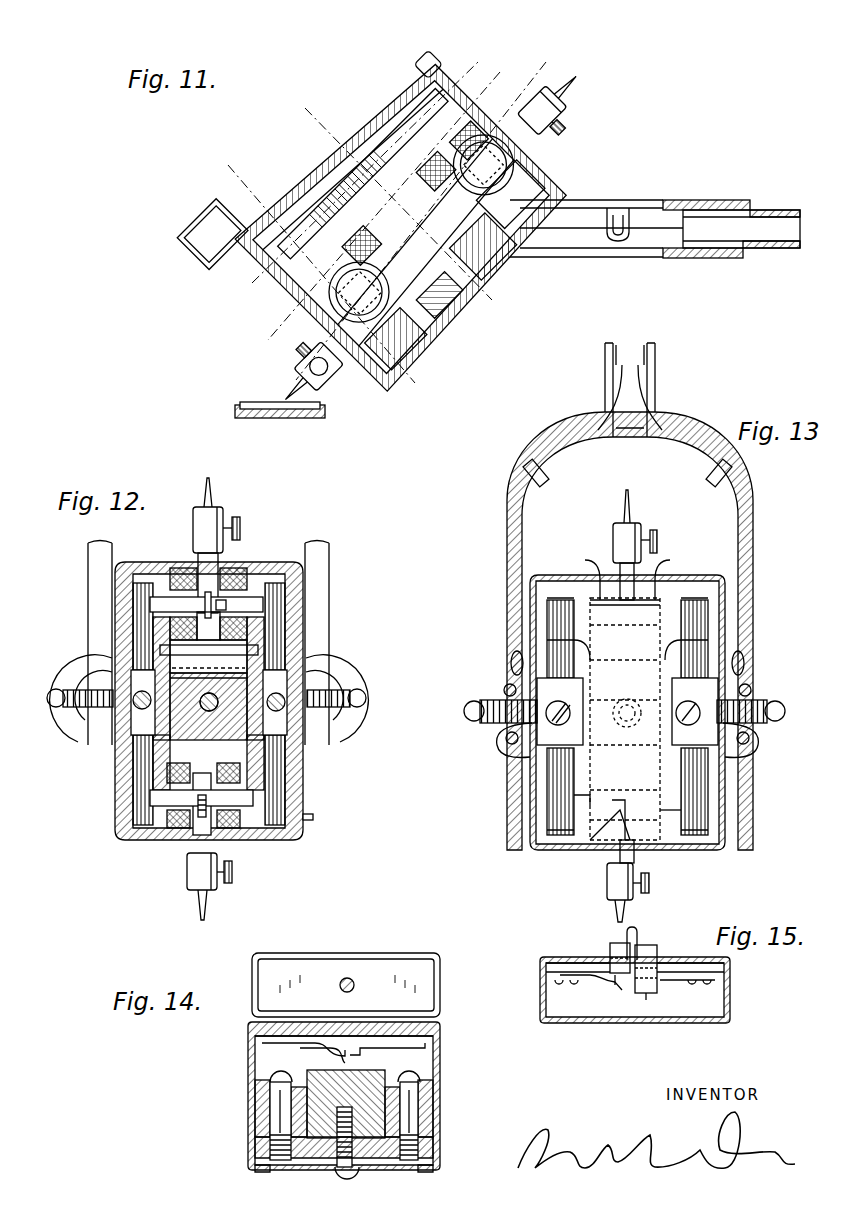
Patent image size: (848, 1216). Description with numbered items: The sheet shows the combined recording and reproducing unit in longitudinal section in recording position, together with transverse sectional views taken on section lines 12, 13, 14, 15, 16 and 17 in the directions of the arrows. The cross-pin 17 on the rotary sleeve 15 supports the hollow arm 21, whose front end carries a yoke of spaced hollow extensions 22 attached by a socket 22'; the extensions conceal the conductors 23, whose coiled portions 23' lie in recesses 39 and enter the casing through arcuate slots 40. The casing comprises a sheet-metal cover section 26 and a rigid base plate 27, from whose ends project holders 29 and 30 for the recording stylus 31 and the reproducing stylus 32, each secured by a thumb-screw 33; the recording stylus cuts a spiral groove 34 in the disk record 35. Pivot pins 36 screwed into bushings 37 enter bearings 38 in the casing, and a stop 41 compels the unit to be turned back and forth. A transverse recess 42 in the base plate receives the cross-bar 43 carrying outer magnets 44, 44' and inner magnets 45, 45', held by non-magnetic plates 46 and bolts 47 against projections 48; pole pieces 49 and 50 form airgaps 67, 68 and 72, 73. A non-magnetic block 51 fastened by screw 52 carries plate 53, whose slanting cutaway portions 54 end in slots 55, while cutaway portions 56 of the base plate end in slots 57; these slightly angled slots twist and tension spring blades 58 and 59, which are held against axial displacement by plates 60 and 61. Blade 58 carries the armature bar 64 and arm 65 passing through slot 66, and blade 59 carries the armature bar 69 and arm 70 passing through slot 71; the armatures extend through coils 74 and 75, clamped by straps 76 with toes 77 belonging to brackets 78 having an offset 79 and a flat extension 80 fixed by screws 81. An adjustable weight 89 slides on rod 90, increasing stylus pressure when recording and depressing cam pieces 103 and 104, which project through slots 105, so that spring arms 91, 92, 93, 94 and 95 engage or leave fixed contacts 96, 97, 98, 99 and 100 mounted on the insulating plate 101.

In FIG. 11, the section line 12— 12 is at (541, 62).
In FIG. 11, the section line 13— 13 is at (501, 66).
In FIG. 11, the section line 14— 14 is at (304, 104).
In FIG. 11, the rotary sleeve 15 is at (400, 57).
In FIG. 11, the section line 16— 16 is at (219, 171).
In FIG. 11, the cross-pin 17 is at (473, 66).
In FIG. 11, the arm 21 is at (765, 210).
In FIG. 13, the arm 21 is at (655, 355).
In FIG. 11, the yoke extensions 22 is at (596, 241).
In FIG. 12, the yoke extensions 22 is at (190, 643).
In FIG. 13, the yoke extensions 22 is at (622, 631).
In FIG. 11, the socket 22' is at (706, 216).
In FIG. 12, the socket 22' is at (343, 618).
In FIG. 13, the socket 22' is at (602, 373).
In FIG. 11, the conductors 23 is at (578, 191).
In FIG. 13, the conductors 23 is at (630, 414).
In FIG. 13, the coiled portions 23' is at (629, 601).
In FIG. 11, the cover section 26 is at (360, 130).
In FIG. 12, the cover section 26 is at (303, 768).
In FIG. 13, the cover section 26 is at (725, 785).
In FIG. 14, the cover section 26 is at (250, 1052).
In FIG. 15, the cover section 26 is at (730, 988).
In FIG. 11, the base plate 27 is at (385, 310).
In FIG. 11, the holder 29 is at (325, 372).
In FIG. 12, the holder 29 is at (187, 870).
In FIG. 13, the holder 29 is at (607, 877).
In FIG. 11, the holder 30 is at (545, 112).
In FIG. 12, the holder 30 is at (220, 530).
In FIG. 13, the holder 30 is at (615, 535).
In FIG. 11, the recording stylus 31 is at (303, 398).
In FIG. 12, the recording stylus 31 is at (200, 905).
In FIG. 13, the recording stylus 31 is at (615, 910).
In FIG. 11, the reproducing stylus 32 is at (558, 84).
In FIG. 12, the reproducing stylus 32 is at (207, 485).
In FIG. 13, the reproducing stylus 32 is at (630, 505).
In FIG. 11, the thumb-screw 33 is at (548, 98).
In FIG. 12, the thumb-screw 33 is at (240, 528).
In FIG. 13, the thumb-screw 33 is at (645, 893).
In FIG. 11, the spiral groove 34 is at (262, 404).
In FIG. 11, the disk record 35 is at (235, 412).
In FIG. 12, the pivot pins 36 is at (75, 708).
In FIG. 13, the pivot pins 36 is at (495, 718).
In FIG. 12, the bushings 37 is at (50, 706).
In FIG. 13, the bushings 37 is at (470, 702).
In FIG. 12, the bearings 38 is at (100, 685).
In FIG. 12, the recesses 39 is at (95, 725).
In FIG. 13, the recesses 39 is at (515, 745).
In FIG. 11, the arcuate slots 40 is at (395, 180).
In FIG. 13, the arcuate slots 40 is at (574, 655).
In FIG. 12, the stop 41 is at (313, 817).
In FIG. 11, the transverse recess 42 is at (468, 300).
In FIG. 11, the cross-bar 43 is at (460, 257).
In FIG. 12, the cross-bar 43 is at (160, 650).
In FIG. 14, the cross-bar 43 is at (365, 1135).
In FIG. 12, the outer permanent magnet 44 is at (102, 780).
In FIG. 13, the outer permanent magnet 44 is at (518, 780).
In FIG. 14, the outer permanent magnet 44 is at (446, 1108).
In FIG. 12, the outer permanent magnet 44' is at (328, 783).
In FIG. 13, the outer permanent magnet 44' is at (746, 813).
In FIG. 14, the outer permanent magnet 44' is at (233, 1108).
In FIG. 11, the inner permanent magnet 45 is at (311, 141).
In FIG. 12, the inner permanent magnet 45 is at (105, 696).
In FIG. 13, the inner permanent magnet 45 is at (507, 626).
In FIG. 14, the inner permanent magnet 45 is at (430, 1109).
In FIG. 12, the inner permanent magnet 45' is at (307, 703).
In FIG. 13, the inner permanent magnet 45' is at (747, 650).
In FIG. 14, the inner permanent magnet 45' is at (253, 1106).
In FIG. 13, the non-magnetic plates 46 is at (720, 765).
In FIG. 14, the non-magnetic plates 46 is at (270, 1080).
In FIG. 12, the bolts 47 is at (133, 700).
In FIG. 13, the bolts 47 is at (566, 705).
In FIG. 14, the bolts 47 is at (278, 1110).
In FIG. 14, the projections 48 is at (415, 1140).
In FIG. 13, the pole pieces 49 is at (585, 600).
In FIG. 13, the pole pieces 50 is at (610, 650).
In FIG. 11, the non-magnetic block 51 is at (378, 296).
In FIG. 12, the non-magnetic block 51 is at (250, 678).
In FIG. 14, the non-magnetic block 51 is at (348, 1172).
In FIG. 11, the screw 52 is at (492, 318).
In FIG. 12, the screw 52 is at (206, 735).
In FIG. 13, the screw 52 is at (574, 762).
In FIG. 14, the screw 52 is at (340, 1160).
In FIG. 11, the plate 53 is at (320, 172).
In FIG. 13, the plate 53 is at (547, 760).
In FIG. 13, the slanting cutaway portions 54 is at (598, 560).
In FIG. 11, the slots 55 is at (535, 128).
In FIG. 13, the slots 55 is at (650, 605).
In FIG. 11, the cutaway portions 56 is at (540, 180).
In FIG. 11, the slots 57 is at (545, 218).
In FIG. 11, the spring blade 58 is at (345, 320).
In FIG. 12, the spring blade 58 is at (198, 805).
In FIG. 13, the spring blade 58 is at (612, 815).
In FIG. 11, the spring blade 59 is at (515, 150).
In FIG. 12, the spring blade 59 is at (226, 605).
In FIG. 13, the spring blade 59 is at (635, 590).
In FIG. 11, the plates 60 is at (442, 88).
In FIG. 11, the plates 61 is at (535, 215).
In FIG. 12, the magnetic armature bar 64 is at (150, 794).
In FIG. 13, the magnetic armature bar 64 is at (595, 845).
In FIG. 11, the non-magnetic arm 65 is at (350, 330).
In FIG. 12, the non-magnetic arm 65 is at (200, 830).
In FIG. 13, the non-magnetic arm 65 is at (634, 855).
In FIG. 12, the slot 66 is at (220, 835).
In FIG. 13, the airgap 67 is at (574, 800).
In FIG. 13, the airgap 68 is at (700, 820).
In FIG. 12, the armature bar 69 is at (190, 598).
In FIG. 13, the armature bar 69 is at (708, 612).
In FIG. 11, the arm 70 is at (525, 138).
In FIG. 12, the arm 70 is at (216, 565).
In FIG. 13, the arm 70 is at (634, 580).
In FIG. 12, the slot 71 is at (200, 590).
In FIG. 12, the airgap 72 is at (142, 590).
In FIG. 13, the airgap 72 is at (547, 610).
In FIG. 12, the airgap 73 is at (285, 595).
In FIG. 13, the airgap 73 is at (708, 635).
In FIG. 11, the coils 74 is at (375, 288).
In FIG. 12, the coils 74 is at (158, 768).
In FIG. 11, the coils 75 is at (460, 192).
In FIG. 12, the coils 75 is at (225, 675).
In FIG. 12, the curved flexible straps 76 is at (240, 575).
In FIG. 11, the toes 77 is at (520, 165).
In FIG. 12, the cylindrical bracket 78 is at (265, 648).
In FIG. 12, the central offset 79 is at (214, 725).
In FIG. 11, the flat extension 80 is at (430, 312).
In FIG. 12, the flat extension 80 is at (175, 665).
In FIG. 11, the screws 81 is at (505, 270).
In FIG. 11, the adjustable weight 89 is at (225, 222).
In FIG. 14, the adjustable weight 89 is at (370, 965).
In FIG. 11, the rod 90 is at (345, 130).
In FIG. 14, the rod 90 is at (348, 978).
In FIG. 15, the rod 90 is at (640, 935).
In FIG. 14, the spring arm 91 is at (375, 1045).
In FIG. 11, the spring arm 92 is at (300, 250).
In FIG. 14, the spring arm 92 is at (338, 1050).
In FIG. 11, the spring arm 93 is at (335, 190).
In FIG. 14, the spring arm 93 is at (320, 1045).
In FIG. 11, the spring arm 94 is at (400, 110).
In FIG. 15, the spring arm 94 is at (630, 985).
In FIG. 11, the spring arm 95 is at (380, 110).
In FIG. 15, the spring arm 95 is at (625, 990).
In FIG. 14, the fixed contact 96 is at (365, 1056).
In FIG. 11, the fixed contact 97 is at (300, 278).
In FIG. 14, the fixed contact 97 is at (335, 1060).
In FIG. 11, the fixed contact 98 is at (330, 183).
In FIG. 14, the fixed contact 98 is at (320, 1050).
In FIG. 11, the fixed contact 99 is at (437, 100).
In FIG. 15, the fixed contact 99 is at (648, 993).
In FIG. 11, the fixed contact 100 is at (427, 97).
In FIG. 15, the fixed contact 100 is at (598, 978).
In FIG. 11, the insulating plate 101 is at (340, 140).
In FIG. 14, the insulating plate 101 is at (256, 1040).
In FIG. 15, the insulating plate 101 is at (690, 978).
In FIG. 11, the cam pieces 103 is at (300, 262).
In FIG. 11, the cam pieces 104 is at (410, 97).
In FIG. 15, the cam pieces 104 is at (610, 953).
In FIG. 11, the slots 105 is at (400, 100).